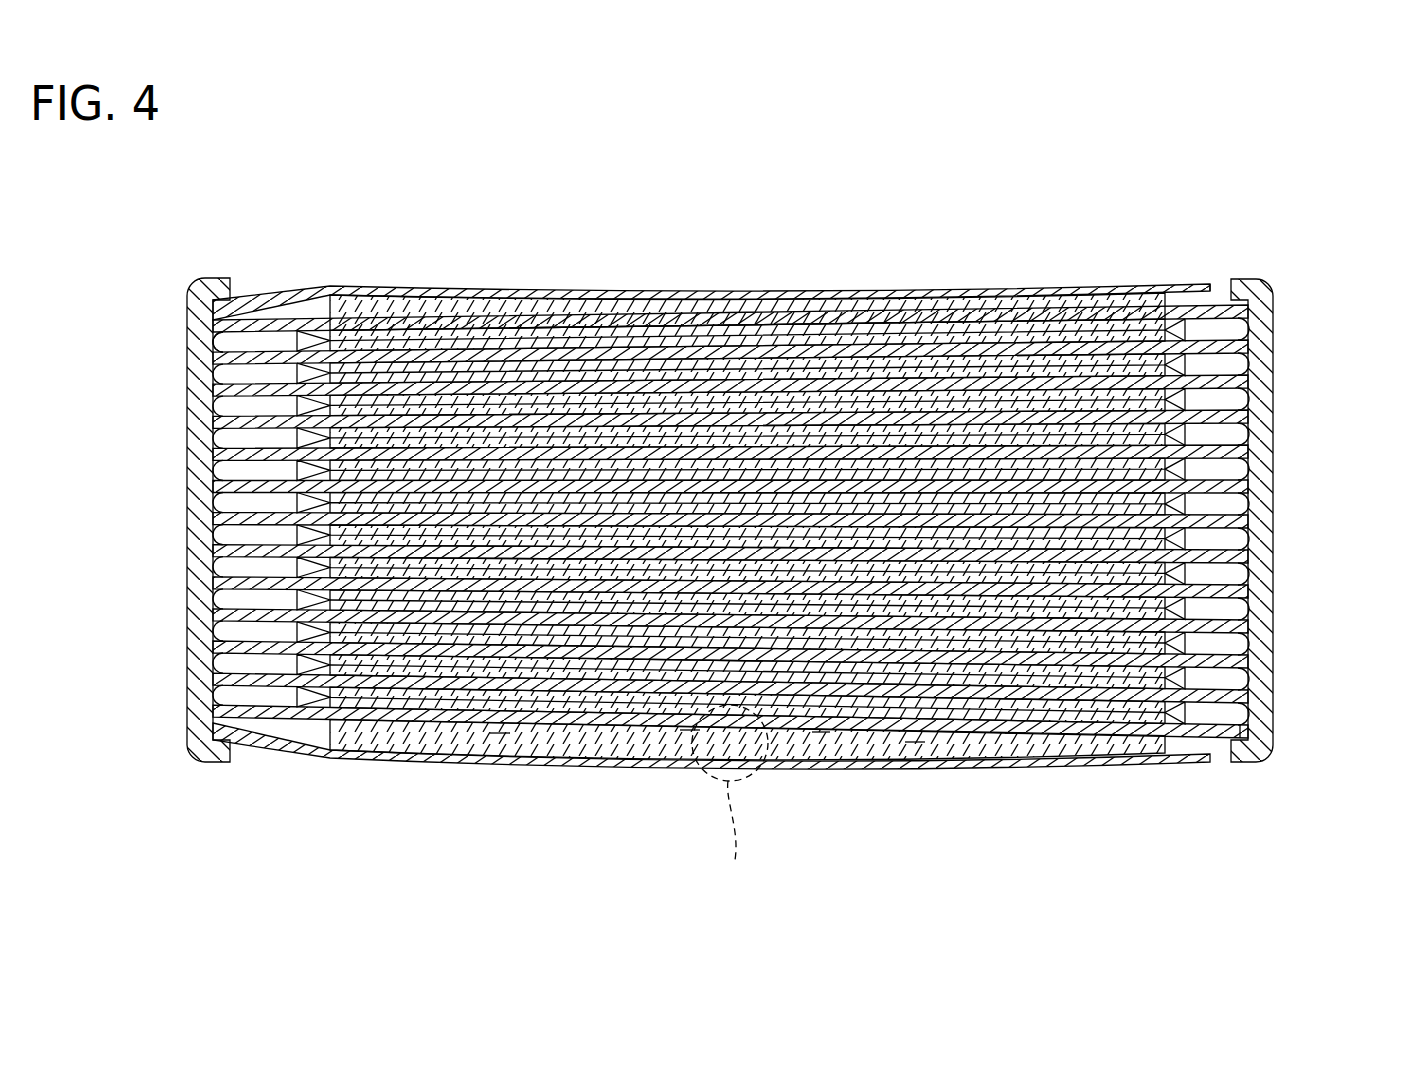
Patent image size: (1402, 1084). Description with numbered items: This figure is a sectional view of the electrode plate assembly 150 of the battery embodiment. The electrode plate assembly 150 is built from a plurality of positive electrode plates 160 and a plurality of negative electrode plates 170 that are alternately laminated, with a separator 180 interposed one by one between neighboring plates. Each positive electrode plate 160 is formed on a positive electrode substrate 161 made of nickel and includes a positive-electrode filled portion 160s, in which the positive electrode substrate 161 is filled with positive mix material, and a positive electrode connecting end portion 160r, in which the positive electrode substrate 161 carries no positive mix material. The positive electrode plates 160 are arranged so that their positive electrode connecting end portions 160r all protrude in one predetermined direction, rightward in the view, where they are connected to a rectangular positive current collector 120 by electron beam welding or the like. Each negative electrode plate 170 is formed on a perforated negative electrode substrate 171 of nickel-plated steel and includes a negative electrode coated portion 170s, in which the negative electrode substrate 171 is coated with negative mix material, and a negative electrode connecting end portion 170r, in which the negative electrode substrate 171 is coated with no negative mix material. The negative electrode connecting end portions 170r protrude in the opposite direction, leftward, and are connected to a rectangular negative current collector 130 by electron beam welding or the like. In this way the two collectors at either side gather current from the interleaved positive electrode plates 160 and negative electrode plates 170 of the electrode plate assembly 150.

The electrode plate assembly 150 is at (795, 260).
The positive current collector 120 is at (1260, 437).
The negative current collector 130 is at (203, 500).
The positive electrode plate 160 is at (1240, 660).
The positive electrode connecting end portion 160r is at (1217, 308).
The positive-electrode filled portion 160s is at (688, 735).
The positive electrode substrate 161 is at (1015, 735).
The negative electrode plate 170 is at (237, 680).
The negative electrode connecting end portion 170r is at (233, 371).
The negative electrode coated portion 170s is at (820, 735).
The negative electrode substrate 171 is at (915, 745).
The separator 180 is at (497, 735).